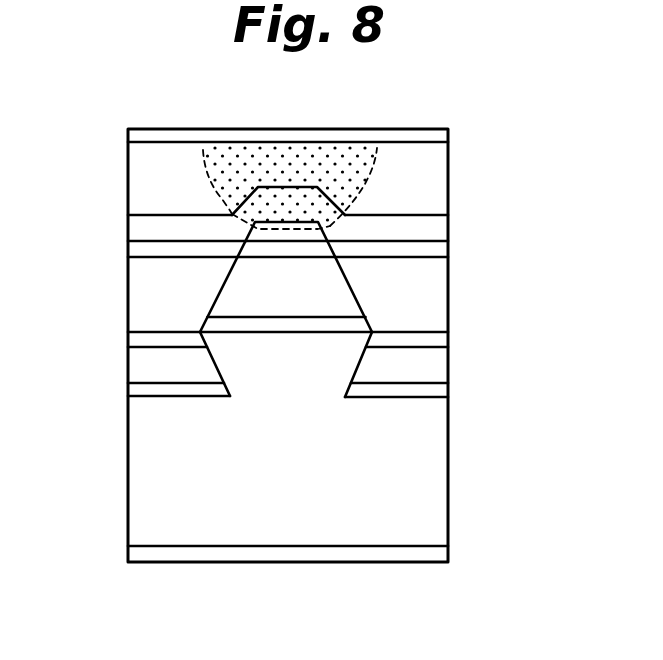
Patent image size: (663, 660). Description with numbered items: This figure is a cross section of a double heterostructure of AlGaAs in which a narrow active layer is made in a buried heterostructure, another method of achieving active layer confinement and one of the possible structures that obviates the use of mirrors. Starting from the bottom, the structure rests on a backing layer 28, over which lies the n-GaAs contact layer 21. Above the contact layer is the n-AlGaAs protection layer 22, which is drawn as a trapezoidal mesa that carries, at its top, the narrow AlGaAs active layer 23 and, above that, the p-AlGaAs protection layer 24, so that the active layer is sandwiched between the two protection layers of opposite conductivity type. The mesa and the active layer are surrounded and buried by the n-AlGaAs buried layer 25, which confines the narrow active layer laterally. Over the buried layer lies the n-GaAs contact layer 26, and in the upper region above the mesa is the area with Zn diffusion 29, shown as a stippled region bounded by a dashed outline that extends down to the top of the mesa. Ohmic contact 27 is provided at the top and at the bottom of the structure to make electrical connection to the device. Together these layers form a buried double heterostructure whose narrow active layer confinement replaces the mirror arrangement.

The n-GaAs contact layer 21 is at (435, 392).
The n-AlGaAs protection layer 22 is at (333, 302).
The AlGaAs active layer 23 is at (243, 247).
The p-AlGaAs protection layer 24 is at (250, 232).
The n-AlGaAs buried layer 25 is at (435, 237).
The n-GaAs contact layer 26 is at (435, 188).
The ohmic contact 27 is at (437, 143).
The backing layer 28 is at (435, 470).
The area with Zn diffusion 29 is at (227, 180).